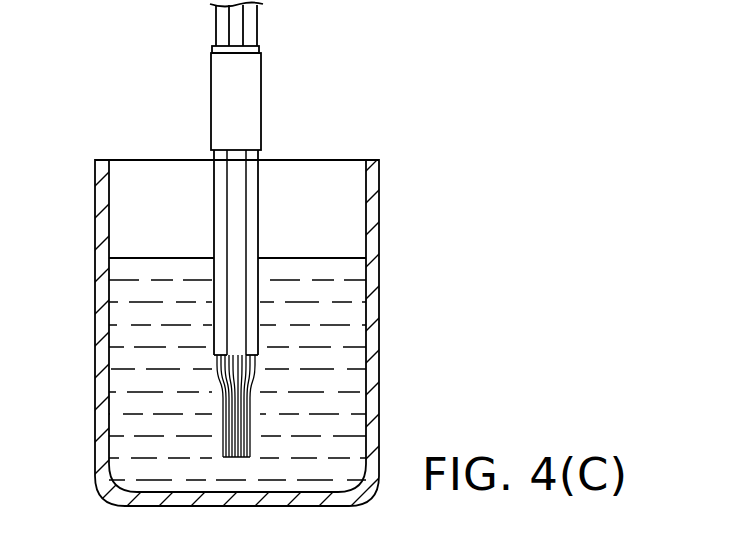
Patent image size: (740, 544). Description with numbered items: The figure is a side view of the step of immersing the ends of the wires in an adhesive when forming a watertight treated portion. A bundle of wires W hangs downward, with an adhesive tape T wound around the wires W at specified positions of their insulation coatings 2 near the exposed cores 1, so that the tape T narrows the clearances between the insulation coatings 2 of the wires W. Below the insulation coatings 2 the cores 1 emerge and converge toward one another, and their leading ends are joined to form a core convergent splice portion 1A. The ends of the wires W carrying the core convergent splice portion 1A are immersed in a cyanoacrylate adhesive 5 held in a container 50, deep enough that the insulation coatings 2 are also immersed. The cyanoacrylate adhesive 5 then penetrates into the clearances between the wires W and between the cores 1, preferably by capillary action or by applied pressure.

The container 50 is at (379, 217).
The cyanoacrylate adhesive 5 is at (345, 358).
The adhesive tape T is at (248, 137).
The wires W is at (258, 192).
The insulation coatings 2 is at (250, 248).
The cores 1 is at (255, 372).
The core convergent splice portion 1A is at (245, 445).